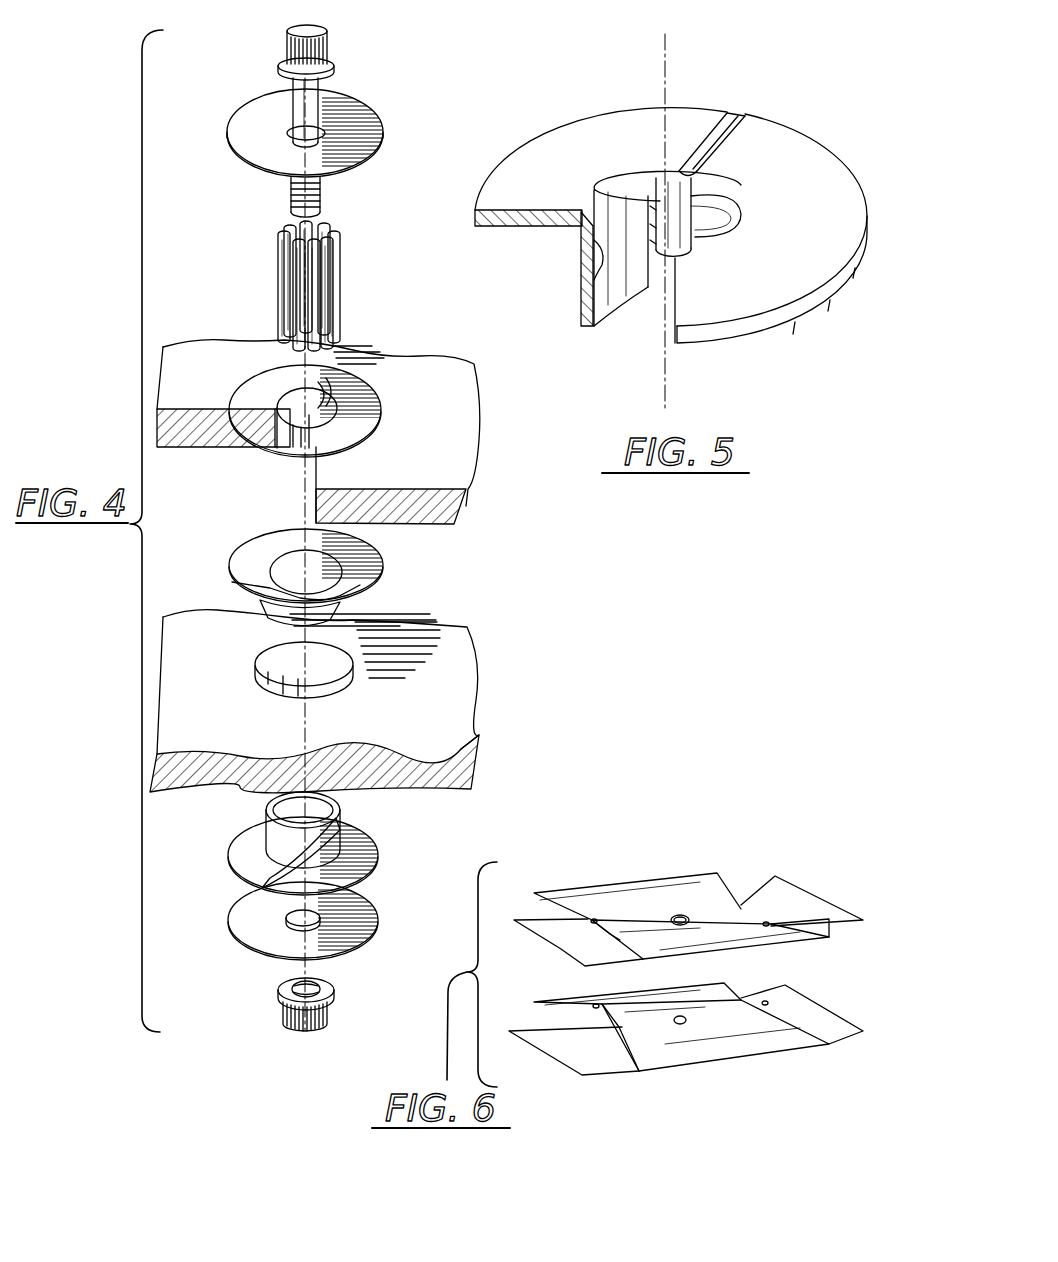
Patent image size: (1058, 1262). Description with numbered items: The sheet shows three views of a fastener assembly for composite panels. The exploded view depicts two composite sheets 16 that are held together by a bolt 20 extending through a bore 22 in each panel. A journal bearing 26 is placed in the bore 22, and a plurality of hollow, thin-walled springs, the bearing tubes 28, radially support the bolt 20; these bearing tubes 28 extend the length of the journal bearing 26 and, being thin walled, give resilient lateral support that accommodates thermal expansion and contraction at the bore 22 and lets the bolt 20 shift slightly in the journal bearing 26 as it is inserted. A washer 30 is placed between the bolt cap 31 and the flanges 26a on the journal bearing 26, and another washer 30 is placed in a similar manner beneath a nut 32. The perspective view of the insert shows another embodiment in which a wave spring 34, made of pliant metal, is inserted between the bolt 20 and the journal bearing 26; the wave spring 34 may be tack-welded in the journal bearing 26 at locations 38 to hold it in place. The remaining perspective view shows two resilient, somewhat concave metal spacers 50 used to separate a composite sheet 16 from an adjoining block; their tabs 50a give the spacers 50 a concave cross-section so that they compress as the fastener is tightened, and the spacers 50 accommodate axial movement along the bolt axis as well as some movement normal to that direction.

In FIG. 4, the composite sheet 16 is at (481, 480).
In FIG. 4, the bolt 20 is at (316, 104).
In FIG. 4, the bore 22 is at (316, 412).
In FIG. 4, the journal bearing 26 is at (369, 416).
In FIG. 5, the journal bearing 26 is at (788, 292).
In FIG. 5, the flange 26a is at (779, 150).
In FIG. 4, the bearing tube 28 is at (340, 294).
In FIG. 4, the washer 30 is at (366, 144).
In FIG. 4, the bolt cap 31 is at (325, 50).
In FIG. 4, the nut 32 is at (324, 1024).
In FIG. 5, the wave spring 34 is at (627, 209).
In FIG. 5, the tack-weld location 38 is at (683, 166).
In FIG. 6, the concave spacer 50 is at (735, 858).
In FIG. 6, the tab 50a is at (651, 890).